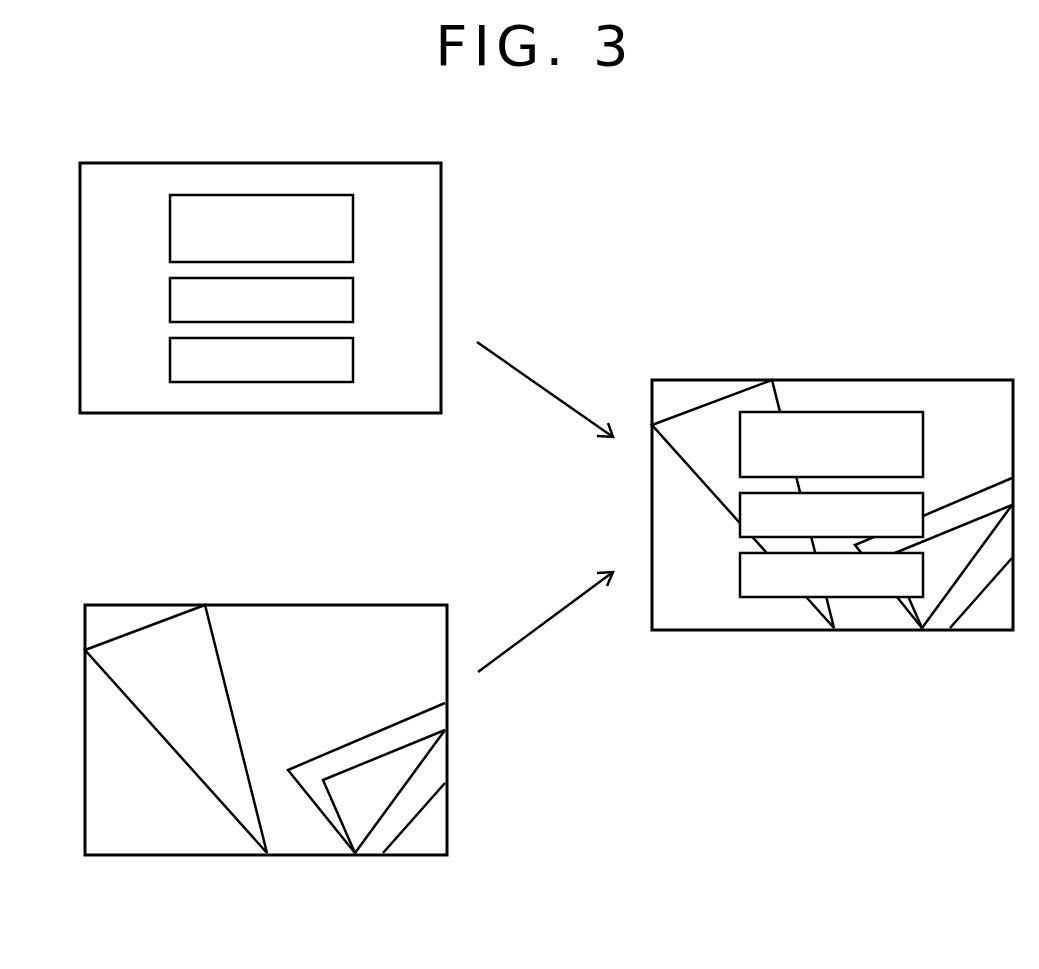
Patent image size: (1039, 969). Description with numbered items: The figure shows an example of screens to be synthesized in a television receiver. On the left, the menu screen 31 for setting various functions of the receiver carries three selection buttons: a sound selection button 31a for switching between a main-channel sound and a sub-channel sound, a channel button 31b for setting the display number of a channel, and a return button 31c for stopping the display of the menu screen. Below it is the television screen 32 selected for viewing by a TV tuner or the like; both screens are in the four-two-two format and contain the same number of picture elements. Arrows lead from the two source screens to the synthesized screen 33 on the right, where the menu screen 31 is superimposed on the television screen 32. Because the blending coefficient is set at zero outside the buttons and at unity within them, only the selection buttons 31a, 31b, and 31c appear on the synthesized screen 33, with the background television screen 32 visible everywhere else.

The menu screen 31 is at (260, 313).
The sound selection button 31a is at (354, 228).
The channel button 31b is at (354, 298).
The return button 31c is at (354, 358).
The television screen 32 is at (355, 853).
The synthesized screen 33 is at (900, 630).